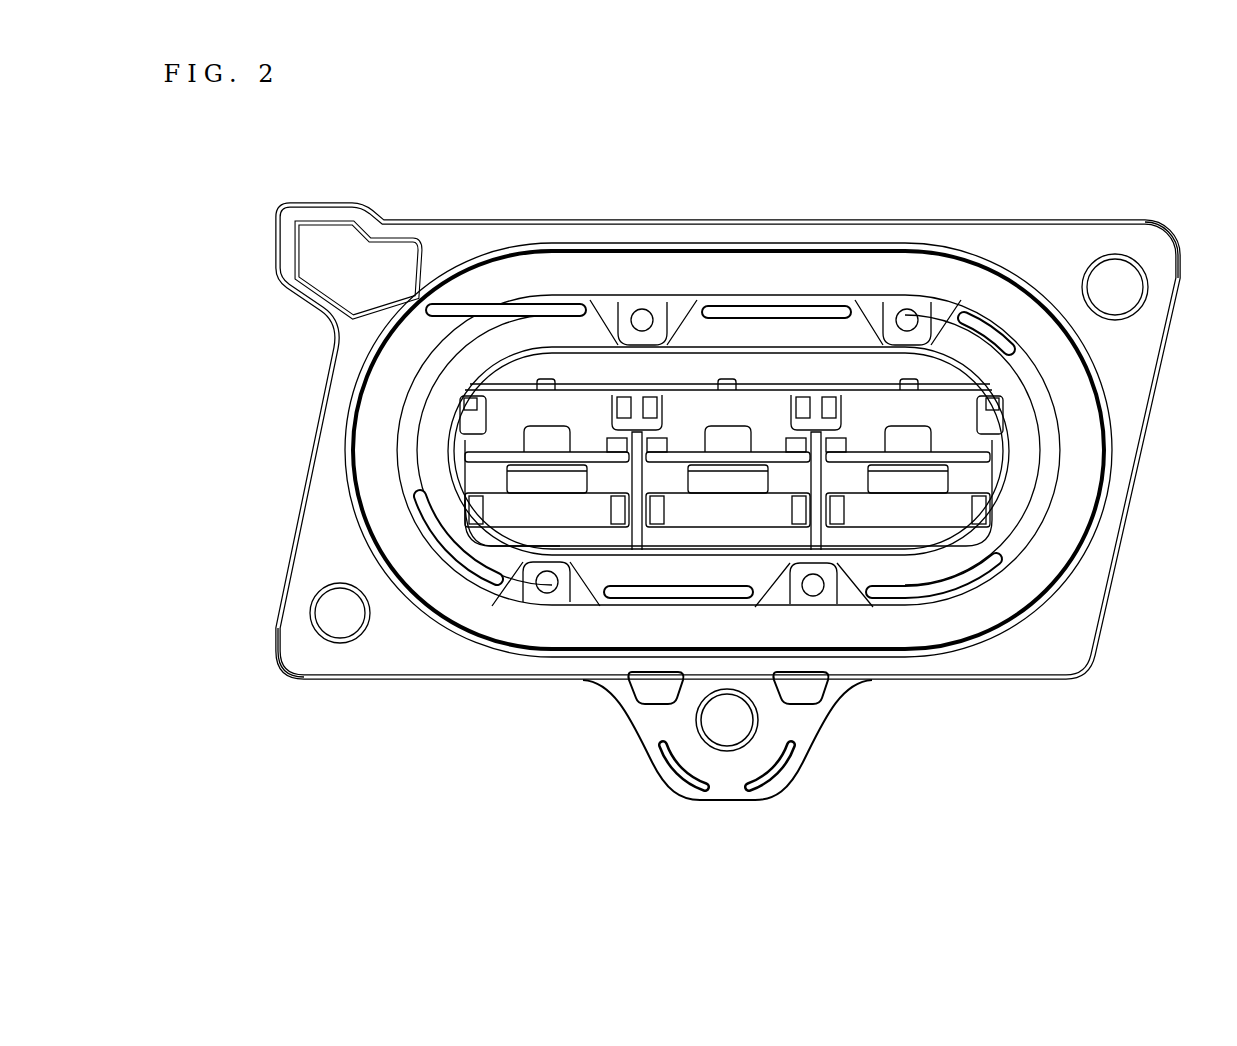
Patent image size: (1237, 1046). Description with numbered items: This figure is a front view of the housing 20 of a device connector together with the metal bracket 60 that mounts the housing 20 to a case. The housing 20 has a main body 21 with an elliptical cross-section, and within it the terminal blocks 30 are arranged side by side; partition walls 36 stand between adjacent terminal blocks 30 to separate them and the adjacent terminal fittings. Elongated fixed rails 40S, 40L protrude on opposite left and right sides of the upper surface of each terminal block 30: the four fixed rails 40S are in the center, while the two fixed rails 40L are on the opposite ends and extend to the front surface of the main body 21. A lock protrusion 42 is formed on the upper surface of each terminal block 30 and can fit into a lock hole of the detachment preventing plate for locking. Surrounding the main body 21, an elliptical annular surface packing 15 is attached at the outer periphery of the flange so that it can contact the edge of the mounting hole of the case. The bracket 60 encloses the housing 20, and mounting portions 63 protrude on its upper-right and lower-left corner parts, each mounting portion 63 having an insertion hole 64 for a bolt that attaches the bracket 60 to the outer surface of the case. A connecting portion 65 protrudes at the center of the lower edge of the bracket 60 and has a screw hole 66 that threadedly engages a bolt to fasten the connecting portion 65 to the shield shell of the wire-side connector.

The surface packing 15 is at (1090, 445).
The housing 20 is at (990, 549).
The main body 21 is at (473, 540).
The terminal block 30 is at (586, 408).
The partition wall 36 is at (638, 508).
The fixed rail 40L is at (468, 400).
The fixed rail 40S is at (836, 398).
The lock protrusion 42 is at (548, 382).
The bracket 60 is at (1120, 546).
The mounting portion 63 is at (1152, 262).
The insertion hole 64 is at (1115, 270).
The connecting portion 65 is at (818, 738).
The screw hole 66 is at (742, 737).